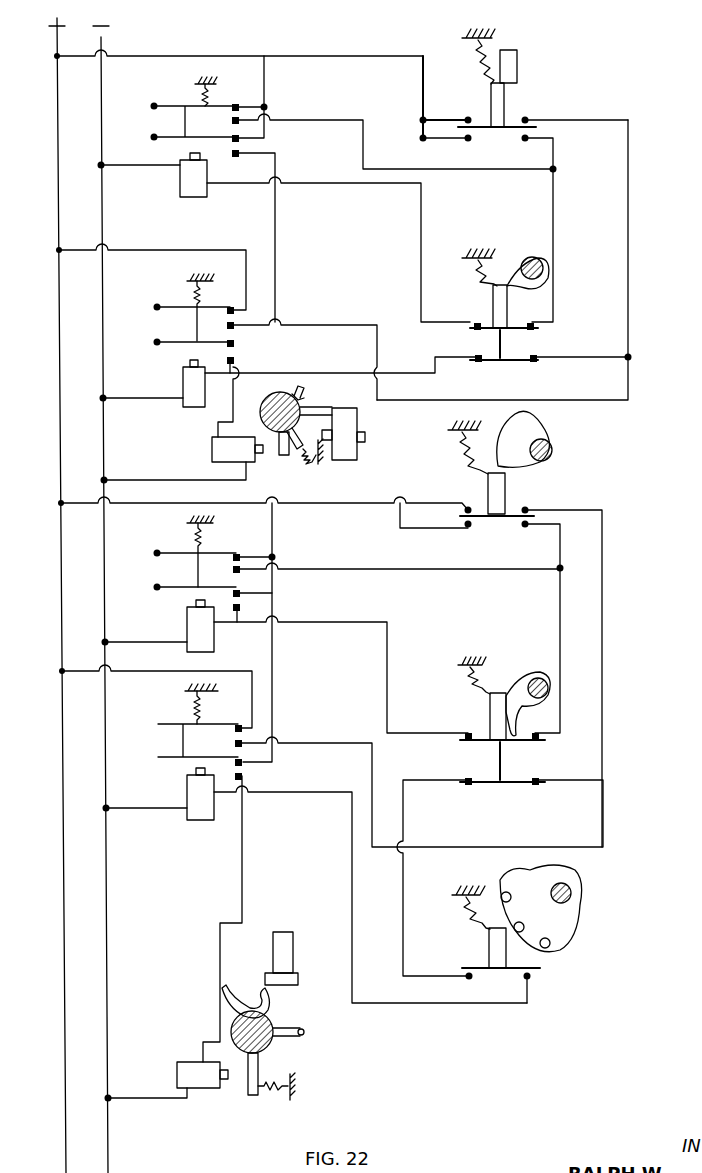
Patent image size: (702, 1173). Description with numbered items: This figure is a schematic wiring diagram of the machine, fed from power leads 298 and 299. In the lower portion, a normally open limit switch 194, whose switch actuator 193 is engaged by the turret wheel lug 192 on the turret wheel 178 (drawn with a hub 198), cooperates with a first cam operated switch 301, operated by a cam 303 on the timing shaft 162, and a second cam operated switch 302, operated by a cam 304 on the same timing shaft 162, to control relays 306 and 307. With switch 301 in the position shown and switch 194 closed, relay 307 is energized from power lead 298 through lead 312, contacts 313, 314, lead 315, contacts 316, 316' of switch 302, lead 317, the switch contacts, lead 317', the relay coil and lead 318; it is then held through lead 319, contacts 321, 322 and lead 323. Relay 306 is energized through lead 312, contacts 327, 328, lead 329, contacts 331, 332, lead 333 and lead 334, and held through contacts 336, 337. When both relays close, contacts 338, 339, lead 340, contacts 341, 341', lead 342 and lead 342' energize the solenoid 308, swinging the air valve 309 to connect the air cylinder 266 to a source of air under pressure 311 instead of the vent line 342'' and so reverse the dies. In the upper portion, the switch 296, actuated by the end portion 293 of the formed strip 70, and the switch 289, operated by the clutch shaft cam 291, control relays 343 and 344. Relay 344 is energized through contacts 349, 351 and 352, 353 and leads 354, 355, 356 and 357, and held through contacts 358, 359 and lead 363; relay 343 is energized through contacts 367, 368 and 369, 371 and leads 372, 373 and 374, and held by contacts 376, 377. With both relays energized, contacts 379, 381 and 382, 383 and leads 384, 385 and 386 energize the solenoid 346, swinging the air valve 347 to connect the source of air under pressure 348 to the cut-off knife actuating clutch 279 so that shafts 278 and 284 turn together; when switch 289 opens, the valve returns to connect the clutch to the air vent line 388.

The formed strip 70 is at (507, 62).
The timing shaft 162 is at (553, 452).
The turret wheel 178 is at (565, 912).
The turret wheel lug 192 is at (506, 930).
The switch actuator 193 is at (492, 942).
The limit switch 194 is at (484, 960).
The cam shaft 198 is at (571, 895).
The air cylinder 266 is at (284, 945).
The shaft 278 is at (327, 447).
The cut-off knife actuating clutch 279 is at (358, 452).
The shaft 284 is at (546, 272).
The switch 289 is at (488, 296).
The clutch shaft cam 291 is at (500, 283).
The end portion 293 is at (517, 86).
The switch 296 is at (512, 104).
The power lead 298 is at (62, 905).
The power lead 299 is at (106, 905).
The first cam operated switch 301 is at (512, 488).
The second cam operated switch 302 is at (486, 706).
The cam 303 is at (528, 432).
The cam 304 is at (524, 684).
The relay 306 is at (190, 620).
The relay 307 is at (200, 812).
The solenoid 308 is at (188, 1066).
The air valve 309 is at (278, 1060).
The source of air under pressure 311 is at (298, 1040).
The lead 312 is at (322, 508).
The contact 313 is at (470, 506).
The contact 314 is at (528, 508).
The lead 315 is at (604, 578).
The contact 316 is at (435, 861).
The contact 316' is at (559, 765).
The lead 317 is at (435, 813).
The lead 317' is at (433, 1026).
The lead 318 is at (132, 808).
The lead 319 is at (120, 672).
The contact 321 is at (240, 728).
The contact 322 is at (242, 744).
The lead 323 is at (292, 740).
The contact 327 is at (470, 528).
The contact 328 is at (524, 528).
The lead 329 is at (556, 608).
The contact 331 is at (468, 732).
The contact 332 is at (528, 735).
The lead 333 is at (358, 622).
The lead 334 is at (132, 642).
The contact 336 is at (236, 554).
The contact 337 is at (236, 570).
The contact 338 is at (242, 593).
The contact 339 is at (242, 608).
The lead 340 is at (275, 656).
The contact 341 is at (281, 761).
The contact 341' is at (263, 917).
The lead 342 is at (370, 894).
The lead 342' is at (152, 1113).
The vent line 342'' is at (245, 980).
The relay 343 is at (195, 200).
The relay 344 is at (188, 406).
The solenoid 346 is at (216, 450).
The air valve 347 is at (262, 414).
The source of air under pressure 348 is at (302, 458).
The contact 349 is at (470, 116).
The contact 351 is at (530, 118).
The contact 352 is at (484, 344).
The contact 353 is at (532, 356).
The lead 354 is at (324, 56).
The lead 355 is at (630, 204).
The lead 356 is at (330, 372).
The lead 357 is at (118, 398).
The contact 358 is at (232, 306).
The contact 359 is at (234, 324).
The lead 363 is at (135, 252).
The contact 367 is at (470, 142).
The contact 368 is at (522, 142).
The contact 369 is at (478, 322).
The contact 371 is at (526, 326).
The lead 372 is at (555, 204).
The lead 373 is at (322, 185).
The lead 374 is at (105, 166).
The contact 376 is at (235, 103).
The contact 377 is at (232, 120).
The contact 379 is at (245, 134).
The contact 381 is at (230, 153).
The contact 382 is at (236, 343).
The contact 383 is at (236, 362).
The lead 384 is at (277, 284).
The lead 385 is at (232, 412).
The lead 386 is at (108, 478).
The air vent line 388 is at (305, 392).